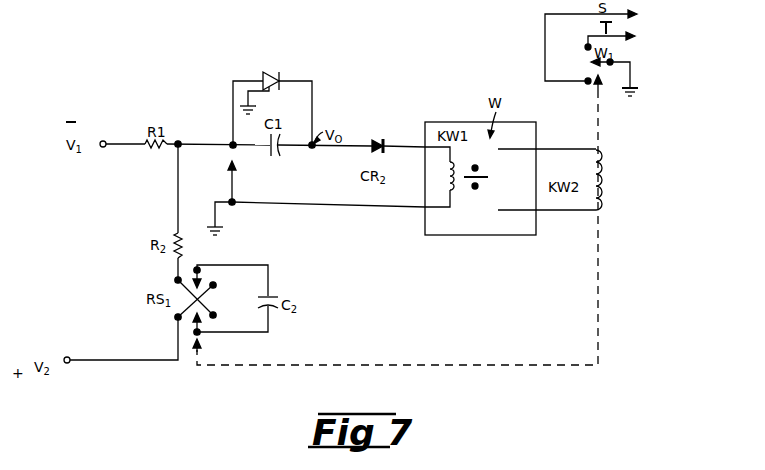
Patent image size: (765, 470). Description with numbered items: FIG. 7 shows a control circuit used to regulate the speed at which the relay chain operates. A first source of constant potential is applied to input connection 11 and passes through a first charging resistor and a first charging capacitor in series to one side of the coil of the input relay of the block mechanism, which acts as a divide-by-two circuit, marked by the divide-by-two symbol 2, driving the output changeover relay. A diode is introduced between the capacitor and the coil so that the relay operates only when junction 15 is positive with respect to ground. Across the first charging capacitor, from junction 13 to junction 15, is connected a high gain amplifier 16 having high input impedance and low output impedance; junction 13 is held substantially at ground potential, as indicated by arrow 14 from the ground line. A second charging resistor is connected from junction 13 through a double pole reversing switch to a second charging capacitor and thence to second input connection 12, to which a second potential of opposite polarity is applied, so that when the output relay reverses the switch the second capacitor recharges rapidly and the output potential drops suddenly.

The input connection 11 is at (108, 134).
The second input connection 12 is at (76, 371).
The junction 13 is at (230, 141).
The arrow 14 is at (239, 196).
The junction 15 is at (311, 157).
The high gain amplifier 16 is at (279, 74).
The divide-by-two counter 2 is at (483, 177).